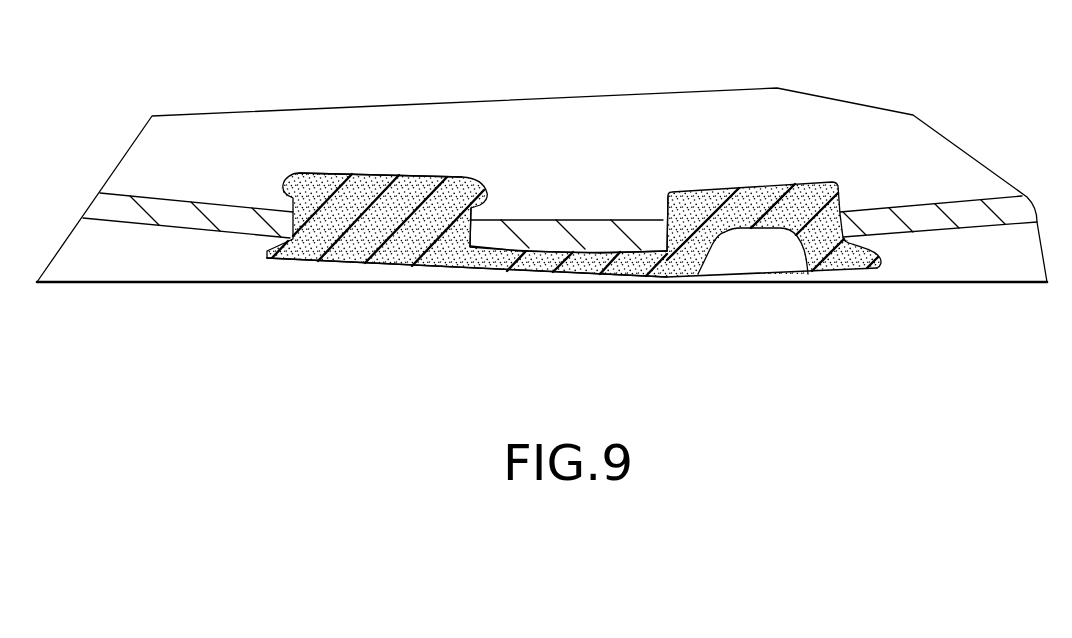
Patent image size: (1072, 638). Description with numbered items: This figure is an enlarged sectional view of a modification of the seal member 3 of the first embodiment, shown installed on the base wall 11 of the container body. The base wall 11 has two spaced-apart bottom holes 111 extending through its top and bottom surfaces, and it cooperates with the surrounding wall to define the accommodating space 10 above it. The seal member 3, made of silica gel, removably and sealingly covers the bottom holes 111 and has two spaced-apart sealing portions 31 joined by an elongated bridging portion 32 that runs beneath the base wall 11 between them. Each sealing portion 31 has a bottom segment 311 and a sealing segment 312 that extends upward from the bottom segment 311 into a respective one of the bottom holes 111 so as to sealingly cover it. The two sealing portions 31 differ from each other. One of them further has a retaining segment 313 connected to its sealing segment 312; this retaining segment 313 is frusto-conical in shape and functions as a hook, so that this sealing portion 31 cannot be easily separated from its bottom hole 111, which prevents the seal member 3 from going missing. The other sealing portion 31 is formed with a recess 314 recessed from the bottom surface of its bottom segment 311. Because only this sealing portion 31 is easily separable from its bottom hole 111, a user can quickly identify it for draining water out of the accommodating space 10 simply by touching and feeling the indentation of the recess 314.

The accommodating space 10 is at (798, 143).
The base wall 11 is at (560, 144).
The bottom holes 111 is at (293, 228).
The seal member 3 is at (579, 209).
The sealing portions 31 is at (575, 209).
The bottom segment 311 is at (357, 247).
The sealing segment 312 is at (470, 222).
The retaining segment 313 is at (370, 175).
The recess 314 is at (772, 243).
The elongated bridging portion 32 is at (578, 265).